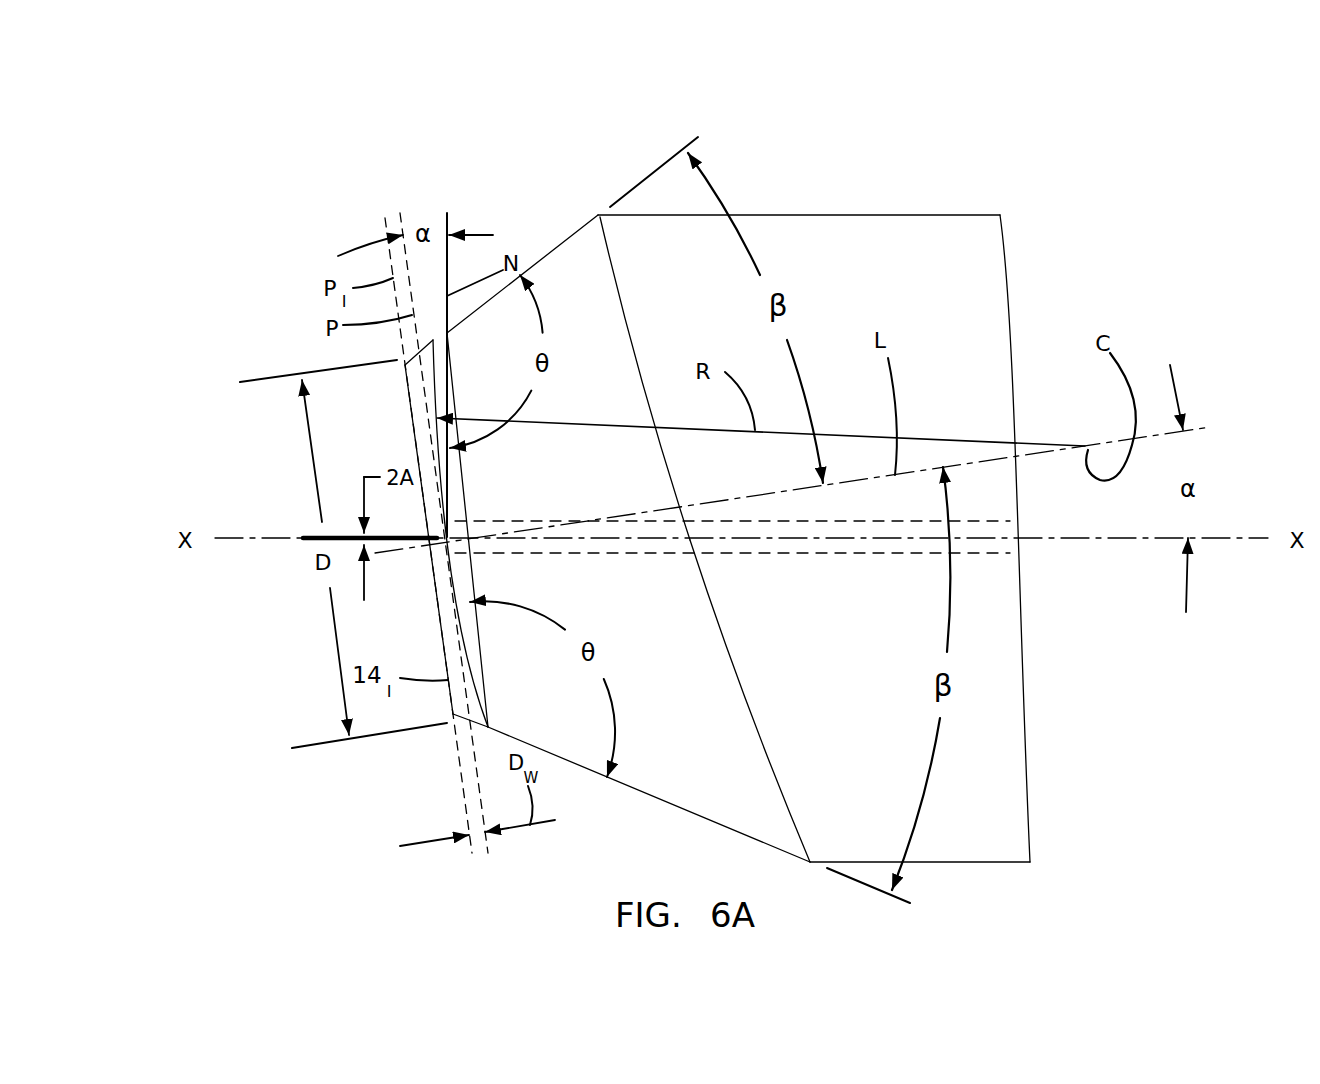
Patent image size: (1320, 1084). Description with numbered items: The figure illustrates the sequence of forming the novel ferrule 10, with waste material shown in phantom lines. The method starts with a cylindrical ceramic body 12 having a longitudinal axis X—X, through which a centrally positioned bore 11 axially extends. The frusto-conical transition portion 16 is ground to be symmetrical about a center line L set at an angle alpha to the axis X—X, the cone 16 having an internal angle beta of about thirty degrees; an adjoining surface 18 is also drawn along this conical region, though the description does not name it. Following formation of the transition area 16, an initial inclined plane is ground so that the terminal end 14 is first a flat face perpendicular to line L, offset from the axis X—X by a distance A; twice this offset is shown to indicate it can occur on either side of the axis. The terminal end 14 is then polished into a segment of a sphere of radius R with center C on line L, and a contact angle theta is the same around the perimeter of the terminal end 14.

The ferrule 10 is at (910, 180).
The bore 11 is at (838, 563).
The cylindrical ceramic body 12 is at (953, 215).
The terminal end 14 is at (463, 658).
The frusto-conical transition portion 16 is at (722, 722).
The upper curved surface portion 18 is at (632, 340).